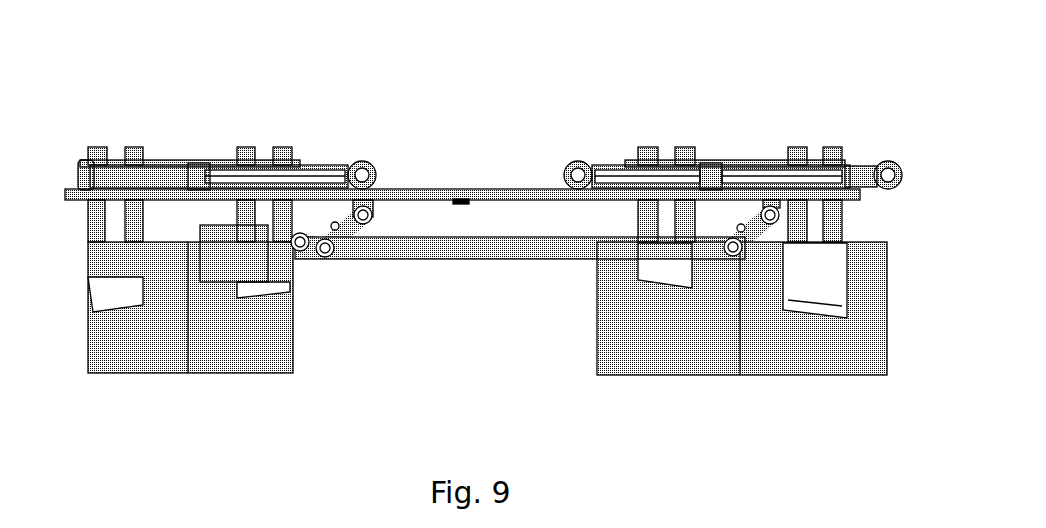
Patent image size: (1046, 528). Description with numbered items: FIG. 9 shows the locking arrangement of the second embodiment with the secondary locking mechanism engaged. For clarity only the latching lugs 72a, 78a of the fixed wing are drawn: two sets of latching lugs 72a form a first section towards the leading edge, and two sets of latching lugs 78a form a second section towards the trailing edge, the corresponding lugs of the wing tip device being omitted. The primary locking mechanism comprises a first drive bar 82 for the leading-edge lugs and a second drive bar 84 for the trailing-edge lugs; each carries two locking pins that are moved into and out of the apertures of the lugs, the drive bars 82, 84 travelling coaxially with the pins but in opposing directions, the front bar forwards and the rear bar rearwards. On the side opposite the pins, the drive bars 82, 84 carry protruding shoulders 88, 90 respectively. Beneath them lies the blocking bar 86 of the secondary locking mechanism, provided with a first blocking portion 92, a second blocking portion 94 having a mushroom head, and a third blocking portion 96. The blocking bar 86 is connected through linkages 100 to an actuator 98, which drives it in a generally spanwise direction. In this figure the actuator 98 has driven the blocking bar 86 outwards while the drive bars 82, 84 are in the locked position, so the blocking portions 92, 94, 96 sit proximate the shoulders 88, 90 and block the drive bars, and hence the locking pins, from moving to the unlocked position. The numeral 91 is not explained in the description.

The latching lugs 72a is at (101, 147).
The latching lugs 78a is at (648, 147).
The first drive bar 82 is at (242, 105).
The second drive bar 84 is at (745, 125).
The blocking bar 86 is at (447, 200).
The protruding shoulder 88 is at (232, 173).
The protruding shoulder 90 is at (613, 173).
The coupling of second actuator 91 is at (768, 172).
The first blocking portion 92 is at (200, 168).
The second blocking portion 94 is at (708, 173).
The third blocking portion 96 is at (860, 187).
The actuator 98 is at (255, 263).
The linkages 100 is at (347, 260).